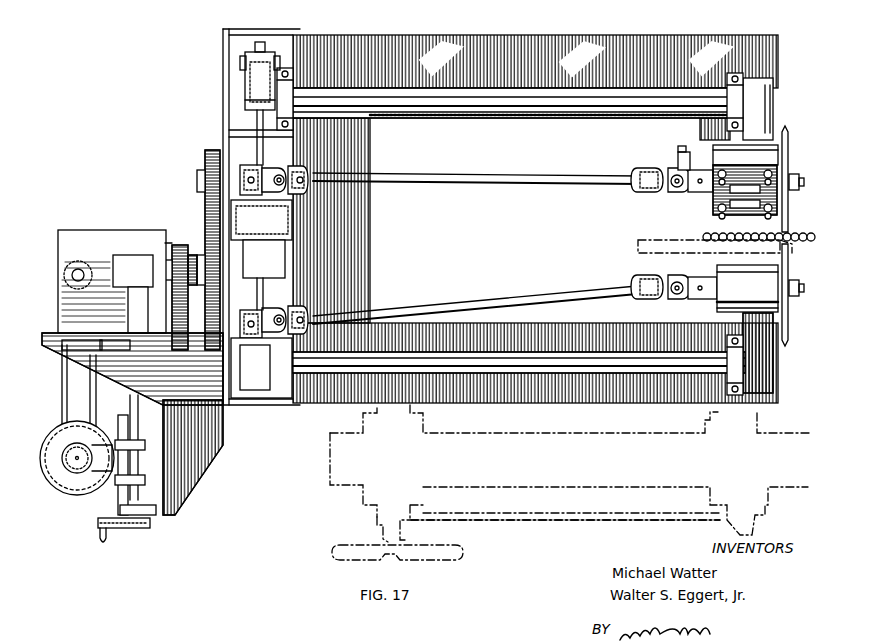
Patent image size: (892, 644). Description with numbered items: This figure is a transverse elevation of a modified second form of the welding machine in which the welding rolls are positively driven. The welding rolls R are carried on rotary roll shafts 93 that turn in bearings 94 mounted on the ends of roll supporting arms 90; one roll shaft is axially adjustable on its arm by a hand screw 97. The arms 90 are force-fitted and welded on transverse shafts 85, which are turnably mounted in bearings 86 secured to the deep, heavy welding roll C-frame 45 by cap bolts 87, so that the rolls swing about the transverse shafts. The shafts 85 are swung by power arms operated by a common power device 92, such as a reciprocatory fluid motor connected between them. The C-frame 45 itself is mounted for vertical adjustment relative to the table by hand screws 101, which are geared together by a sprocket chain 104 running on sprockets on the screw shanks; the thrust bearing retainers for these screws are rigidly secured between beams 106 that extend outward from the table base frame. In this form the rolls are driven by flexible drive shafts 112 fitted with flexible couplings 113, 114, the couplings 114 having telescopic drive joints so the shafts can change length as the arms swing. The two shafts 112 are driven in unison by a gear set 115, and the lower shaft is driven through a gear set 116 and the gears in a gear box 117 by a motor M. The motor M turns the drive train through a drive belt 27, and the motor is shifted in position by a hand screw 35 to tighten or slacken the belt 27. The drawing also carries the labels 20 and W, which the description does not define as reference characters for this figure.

The welding roll C-frame 45 is at (521, 40).
The transverse shaft 85 is at (529, 100).
The bearing 86 is at (290, 74).
The cap bolt 87 is at (271, 74).
The roll supporting arm 90 is at (758, 88).
The power device 92 is at (272, 265).
The roll shaft 93 is at (796, 190).
The bearing 94 is at (774, 144).
The hand screw 97 is at (680, 155).
The hand screw 101 is at (385, 537).
The sprocket chain 104 is at (574, 522).
The beam 106 is at (586, 489).
The flexible drive shaft 112 is at (495, 184).
The flexible coupling 113 is at (298, 165).
The flexible coupling with telescopic drive joint 114 is at (640, 184).
The gear set 115 is at (204, 210).
The gear set 116 is at (180, 245).
The gear box 117 is at (98, 240).
The chain 20 is at (678, 236).
The drive belt 27 is at (62, 376).
The hand screw 35 is at (119, 514).
The motor M is at (60, 426).
The welding roll R is at (788, 134).
The wheel W is at (812, 218).